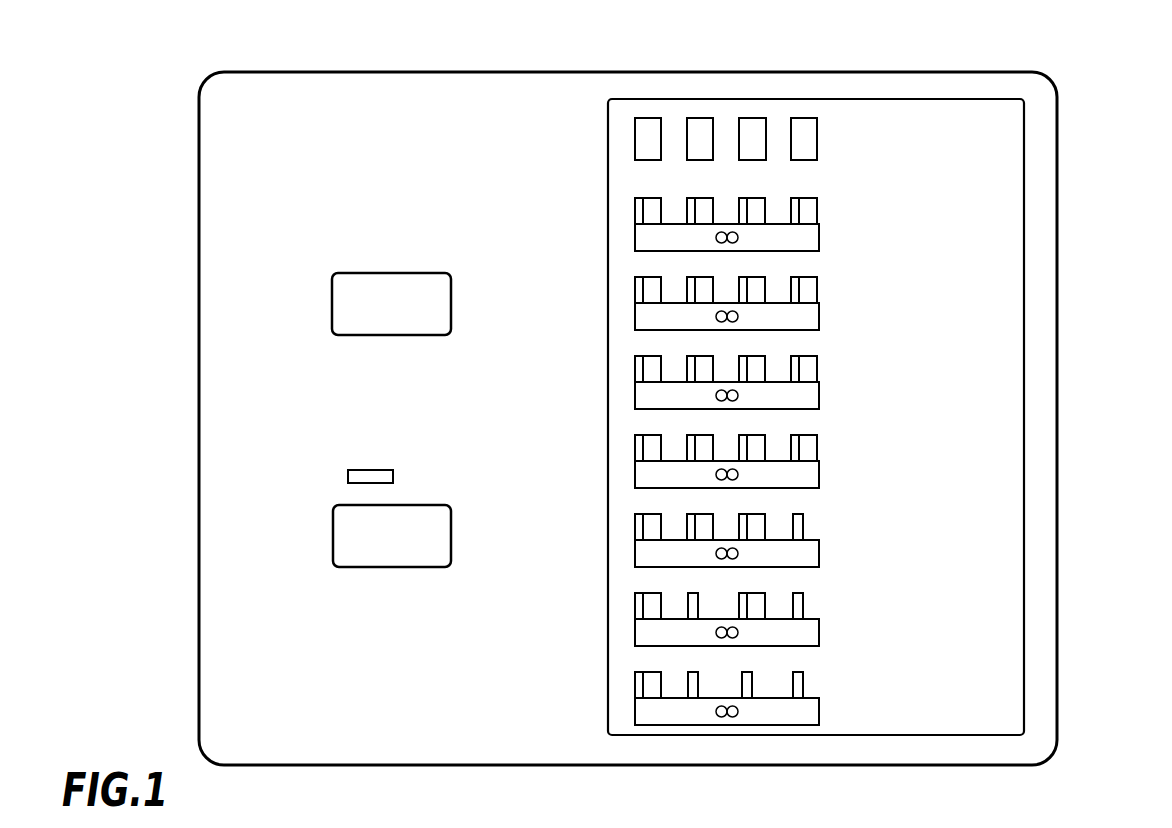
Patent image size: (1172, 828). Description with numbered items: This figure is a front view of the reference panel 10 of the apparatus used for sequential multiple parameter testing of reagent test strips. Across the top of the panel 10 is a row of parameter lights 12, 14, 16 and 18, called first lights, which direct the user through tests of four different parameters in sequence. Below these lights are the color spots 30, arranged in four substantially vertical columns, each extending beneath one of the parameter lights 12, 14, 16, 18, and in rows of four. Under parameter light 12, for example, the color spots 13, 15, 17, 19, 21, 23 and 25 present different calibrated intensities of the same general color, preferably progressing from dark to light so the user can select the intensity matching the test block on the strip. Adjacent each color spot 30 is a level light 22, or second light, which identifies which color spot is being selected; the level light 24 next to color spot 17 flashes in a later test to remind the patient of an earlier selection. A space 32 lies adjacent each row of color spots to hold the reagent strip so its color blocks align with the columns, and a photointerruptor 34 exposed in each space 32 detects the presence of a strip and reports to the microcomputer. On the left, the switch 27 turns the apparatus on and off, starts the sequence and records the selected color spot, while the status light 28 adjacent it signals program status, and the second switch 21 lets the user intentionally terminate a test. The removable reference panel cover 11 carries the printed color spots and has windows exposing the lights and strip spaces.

The panel 10 is at (970, 193).
The reference panel cover 11 is at (1047, 453).
The parameter light 12 is at (648, 130).
The parameter light 14 is at (700, 130).
The parameter light 16 is at (752, 130).
The parameter light 18 is at (805, 130).
The color spot 13 is at (652, 205).
The color spot 15 is at (722, 299).
The color spot 17 is at (721, 375).
The color spot 19 is at (722, 473).
The second switch 21 is at (652, 520).
The color spot 23 is at (652, 599).
The color spot 25 is at (652, 678).
The level light 22 is at (796, 370).
The level light 24 is at (641, 371).
The color spot 30 is at (806, 296).
The space 32 is at (807, 406).
The photointerruptor 34 is at (733, 477).
The switch 27 is at (417, 505).
The status light 28 is at (379, 470).